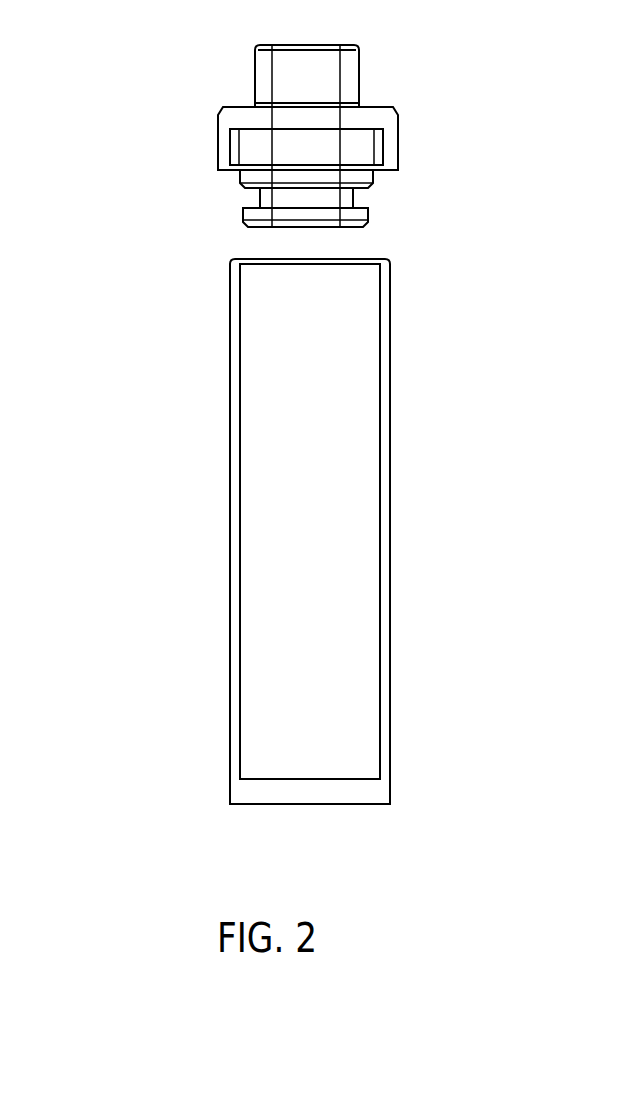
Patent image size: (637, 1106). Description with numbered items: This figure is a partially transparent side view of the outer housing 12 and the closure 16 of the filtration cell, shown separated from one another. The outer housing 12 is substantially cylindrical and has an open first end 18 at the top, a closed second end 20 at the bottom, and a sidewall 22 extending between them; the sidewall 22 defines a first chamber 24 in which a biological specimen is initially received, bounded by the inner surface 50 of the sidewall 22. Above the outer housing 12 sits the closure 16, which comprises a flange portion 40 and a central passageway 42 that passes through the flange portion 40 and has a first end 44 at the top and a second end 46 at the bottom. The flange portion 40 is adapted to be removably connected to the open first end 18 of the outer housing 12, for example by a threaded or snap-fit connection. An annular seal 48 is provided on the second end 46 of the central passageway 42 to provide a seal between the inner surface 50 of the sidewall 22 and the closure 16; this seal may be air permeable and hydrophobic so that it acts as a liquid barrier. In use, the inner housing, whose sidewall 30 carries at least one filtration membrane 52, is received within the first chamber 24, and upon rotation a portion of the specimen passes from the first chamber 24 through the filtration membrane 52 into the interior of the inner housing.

The outer housing 12 is at (104, 593).
The closure 16 is at (432, 98).
The open first end 18 is at (368, 258).
The closed second end 20 is at (323, 805).
The sidewall 22 is at (383, 610).
The first chamber 24 is at (373, 447).
The sidewall 30 is at (248, 532).
The flange portion 40 is at (222, 133).
The central passageway 42 is at (260, 77).
The first end 44 is at (262, 46).
The second end 46 is at (248, 225).
The annular seal 48 is at (245, 213).
The inner surface 50 is at (246, 722).
The filtration membrane 52 is at (373, 697).